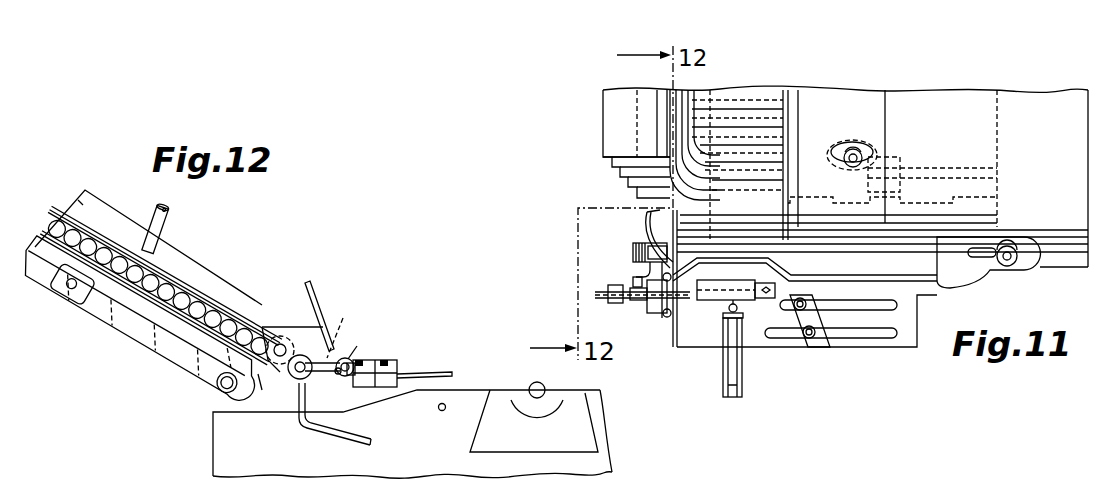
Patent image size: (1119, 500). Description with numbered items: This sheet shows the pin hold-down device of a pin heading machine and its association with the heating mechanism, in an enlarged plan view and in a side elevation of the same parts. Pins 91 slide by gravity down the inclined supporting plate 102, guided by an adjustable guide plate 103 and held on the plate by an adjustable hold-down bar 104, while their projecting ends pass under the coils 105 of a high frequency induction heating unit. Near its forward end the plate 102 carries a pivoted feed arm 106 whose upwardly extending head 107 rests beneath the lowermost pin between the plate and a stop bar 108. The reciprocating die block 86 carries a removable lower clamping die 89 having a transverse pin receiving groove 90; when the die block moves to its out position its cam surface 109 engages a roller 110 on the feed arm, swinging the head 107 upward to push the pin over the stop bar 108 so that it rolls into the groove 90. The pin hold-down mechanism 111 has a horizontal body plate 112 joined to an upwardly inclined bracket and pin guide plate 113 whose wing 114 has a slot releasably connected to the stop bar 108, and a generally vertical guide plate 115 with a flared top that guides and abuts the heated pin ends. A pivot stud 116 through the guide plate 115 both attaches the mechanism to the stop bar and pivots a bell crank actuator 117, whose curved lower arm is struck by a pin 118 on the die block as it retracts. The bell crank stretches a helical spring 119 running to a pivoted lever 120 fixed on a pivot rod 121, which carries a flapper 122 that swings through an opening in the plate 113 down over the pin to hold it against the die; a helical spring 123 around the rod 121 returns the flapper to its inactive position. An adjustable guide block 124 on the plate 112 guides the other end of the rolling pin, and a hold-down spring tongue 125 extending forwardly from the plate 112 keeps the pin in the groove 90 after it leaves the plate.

In FIG. 12, the die block 86 is at (412, 434).
In FIG. 12, the lower clamping die 89 is at (534, 421).
In FIG. 12, the pin receiving groove 90 is at (541, 397).
In FIG. 12, the pin 91 is at (159, 285).
In FIG. 11, the pin 91 is at (775, 145).
In FIG. 12, the supporting plate 102 is at (72, 284).
In FIG. 11, the supporting plate 102 is at (633, 197).
In FIG. 11, the adjustable guide plate 103 is at (787, 127).
In FIG. 12, the adjustable hold-down bar 104 is at (182, 255).
In FIG. 11, the coils 105 is at (622, 184).
In FIG. 12, the feed arm 106 is at (139, 320).
In FIG. 12, the head 107 is at (255, 383).
In FIG. 12, the stop bar 108 is at (288, 335).
In FIG. 11, the stop bar 108 is at (872, 257).
In FIG. 12, the cam surface 109 is at (384, 400).
In FIG. 12, the roller 110 is at (226, 382).
In FIG. 12, the pin hold-down mechanism 111 is at (376, 324).
In FIG. 11, the pin hold-down mechanism 111 is at (786, 369).
In FIG. 12, the body plate 112 is at (400, 372).
In FIG. 11, the body plate 112 is at (694, 350).
In FIG. 12, the bracket and pin guide plate 113 is at (321, 304).
In FIG. 11, the bracket and pin guide plate 113 is at (868, 285).
In FIG. 11, the wing 114 is at (1034, 238).
In FIG. 12, the guide plate 115 is at (280, 333).
In FIG. 11, the guide plate 115 is at (671, 323).
In FIG. 12, the pivot stud 116 is at (298, 378).
In FIG. 11, the pivot stud 116 is at (633, 255).
In FIG. 12, the bell crank actuator 117 is at (307, 428).
In FIG. 11, the bell crank actuator 117 is at (645, 320).
In FIG. 12, the pin 118 is at (445, 404).
In FIG. 12, the helical spring 119 is at (337, 377).
In FIG. 11, the helical spring 119 is at (632, 282).
In FIG. 12, the pivoted lever 120 is at (352, 361).
In FIG. 11, the pivoted lever 120 is at (620, 303).
In FIG. 12, the pivot rod 121 is at (352, 378).
In FIG. 11, the pivot rod 121 is at (596, 294).
In FIG. 12, the flapper 122 is at (343, 330).
In FIG. 11, the flapper 122 is at (735, 290).
In FIG. 11, the helical spring 123 is at (650, 305).
In FIG. 11, the adjustable guide block 124 is at (806, 345).
In FIG. 12, the hold-down spring tongue 125 is at (437, 373).
In FIG. 11, the hold-down spring tongue 125 is at (733, 399).